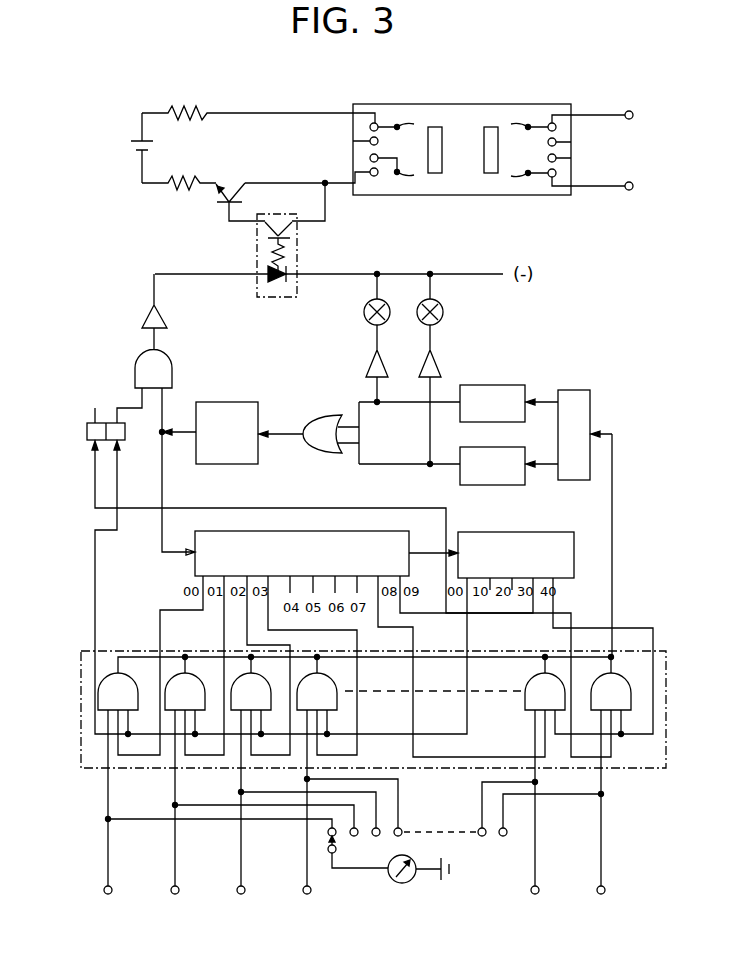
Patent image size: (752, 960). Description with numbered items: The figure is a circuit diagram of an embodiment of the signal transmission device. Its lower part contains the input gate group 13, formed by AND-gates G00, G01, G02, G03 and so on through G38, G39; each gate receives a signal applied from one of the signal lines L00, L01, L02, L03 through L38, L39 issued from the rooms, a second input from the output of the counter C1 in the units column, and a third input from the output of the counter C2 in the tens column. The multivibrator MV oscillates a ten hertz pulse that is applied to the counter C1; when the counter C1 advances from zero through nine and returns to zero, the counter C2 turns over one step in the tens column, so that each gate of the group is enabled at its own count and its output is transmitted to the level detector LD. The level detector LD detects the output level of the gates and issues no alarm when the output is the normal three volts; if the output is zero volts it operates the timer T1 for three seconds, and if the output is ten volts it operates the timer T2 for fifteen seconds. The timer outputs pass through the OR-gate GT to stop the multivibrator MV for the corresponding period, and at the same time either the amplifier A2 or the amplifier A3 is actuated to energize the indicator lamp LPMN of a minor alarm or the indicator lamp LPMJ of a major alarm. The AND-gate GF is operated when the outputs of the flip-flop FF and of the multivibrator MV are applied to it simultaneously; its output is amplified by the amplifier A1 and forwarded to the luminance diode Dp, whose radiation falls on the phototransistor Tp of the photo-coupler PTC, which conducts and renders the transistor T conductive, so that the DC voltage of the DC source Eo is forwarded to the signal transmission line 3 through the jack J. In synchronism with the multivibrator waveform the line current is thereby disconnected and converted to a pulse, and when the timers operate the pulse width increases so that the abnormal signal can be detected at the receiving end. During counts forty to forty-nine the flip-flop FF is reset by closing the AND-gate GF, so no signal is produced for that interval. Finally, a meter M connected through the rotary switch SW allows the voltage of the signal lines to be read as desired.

The signal transmission line 3 is at (521, 163).
The input gate group 13 is at (352, 709).
The jack J is at (478, 196).
The photo-coupler PTC is at (297, 240).
The transistor T is at (221, 188).
The phototransistor Tp is at (267, 232).
The luminance diode Dp is at (277, 297).
The DC source Eo is at (131, 151).
The indicator lamp of a minor alarm LPMN is at (364, 314).
The indicator lamp of a major alarm LPMJ is at (443, 314).
The amplifier A1 is at (162, 313).
The amplifier A2 is at (368, 363).
The amplifier A3 is at (440, 363).
The AND-gate GF is at (172, 358).
The OR-gate GT is at (322, 408).
The flip-flop FF is at (87, 432).
The multivibrator MV is at (227, 433).
The timer T1 is at (492, 403).
The timer T2 is at (492, 466).
The level detector LD is at (574, 435).
The counter C1 is at (313, 530).
The counter C2 is at (501, 530).
The AND-gate G00 is at (118, 691).
The AND-gate G01 is at (185, 691).
The AND-gate G02 is at (251, 691).
The AND-gate G03 is at (317, 691).
The AND-gate G38 is at (545, 691).
The AND-gate G39 is at (611, 691).
The signal line L00 is at (105, 814).
The signal line L01 is at (172, 814).
The signal line L02 is at (238, 814).
The signal line L03 is at (304, 814).
The signal line L38 is at (532, 814).
The signal line L39 is at (598, 814).
The rotary switch SW is at (410, 832).
The meter M is at (408, 884).